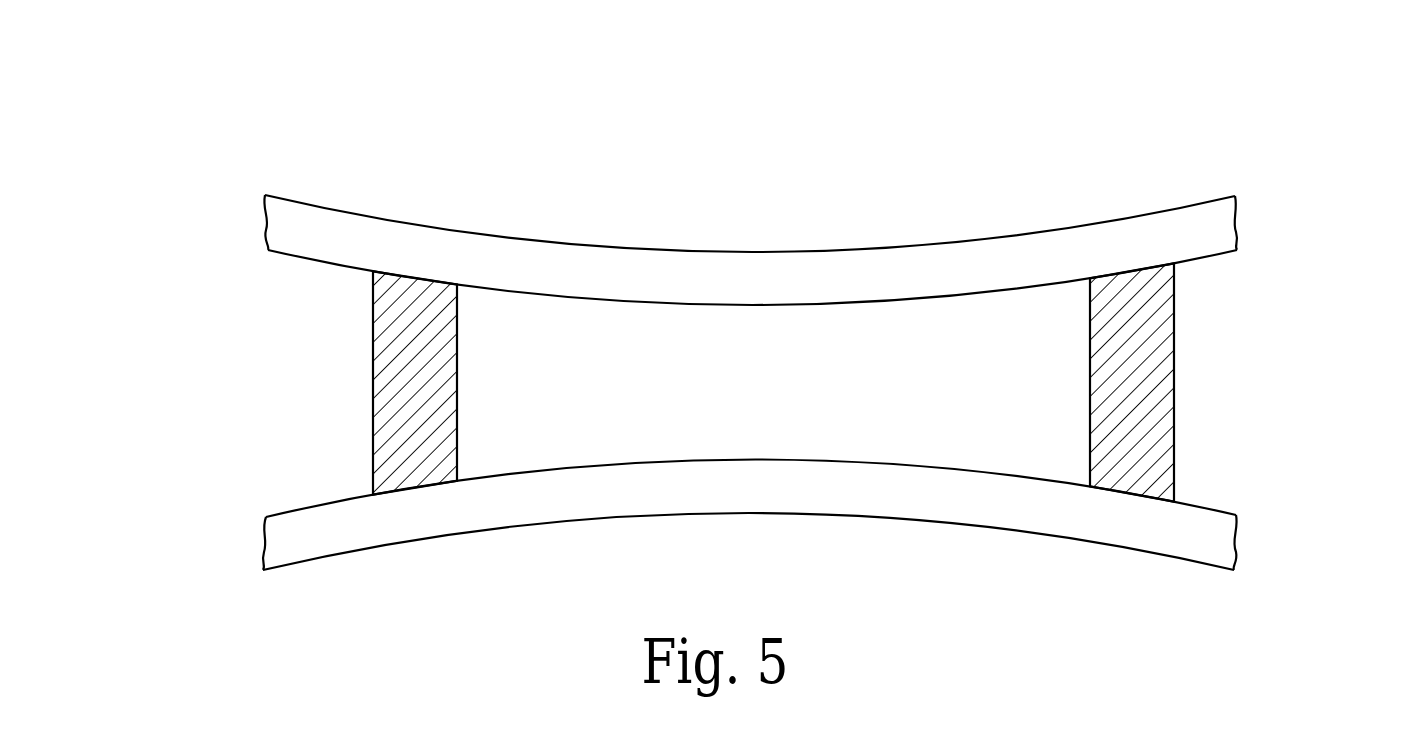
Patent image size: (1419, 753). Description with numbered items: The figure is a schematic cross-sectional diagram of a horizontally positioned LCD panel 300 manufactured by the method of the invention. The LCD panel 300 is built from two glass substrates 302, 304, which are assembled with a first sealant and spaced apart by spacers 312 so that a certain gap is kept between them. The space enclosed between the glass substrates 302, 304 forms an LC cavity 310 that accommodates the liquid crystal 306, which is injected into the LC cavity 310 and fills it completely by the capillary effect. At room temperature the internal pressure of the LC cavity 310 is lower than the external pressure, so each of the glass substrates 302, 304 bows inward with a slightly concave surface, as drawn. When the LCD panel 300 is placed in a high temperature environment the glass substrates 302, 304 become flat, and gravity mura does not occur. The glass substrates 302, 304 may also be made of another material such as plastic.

The LCD panel 300 is at (1205, 145).
The glass substrate 302 is at (266, 215).
The glass substrate 304 is at (266, 540).
The liquid crystal 306 is at (888, 330).
The LC cavity 310 is at (638, 345).
The spacers 312 is at (418, 303).